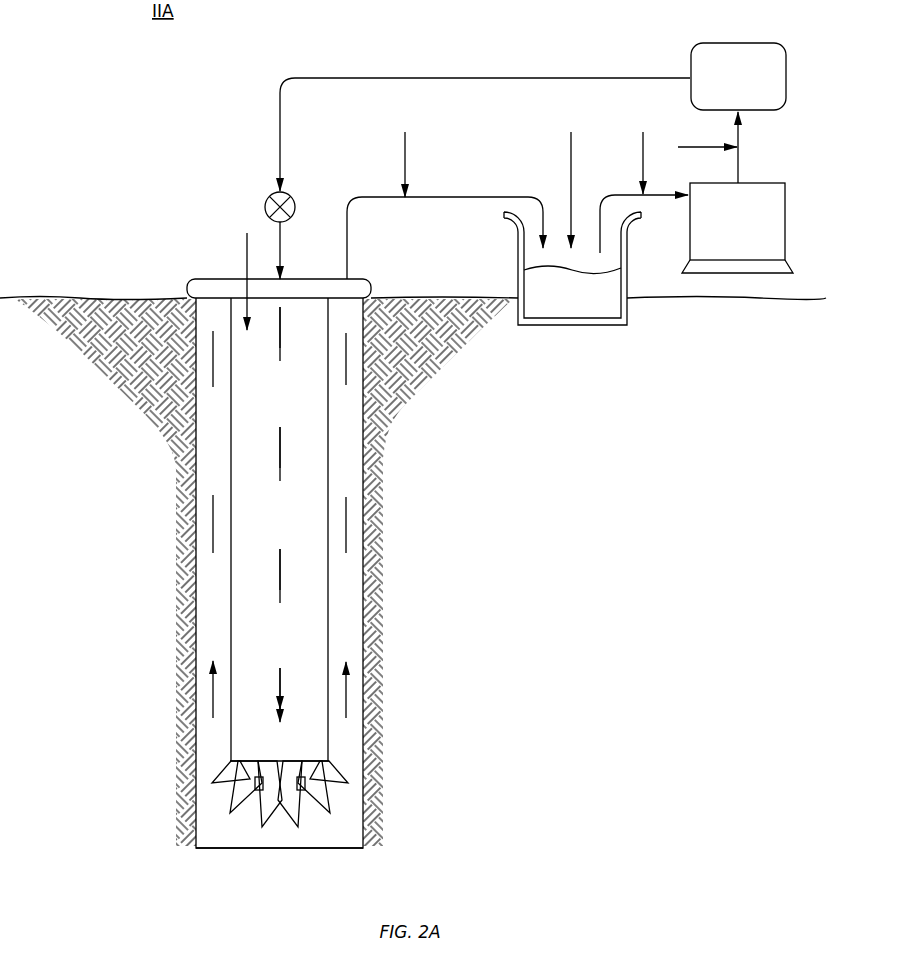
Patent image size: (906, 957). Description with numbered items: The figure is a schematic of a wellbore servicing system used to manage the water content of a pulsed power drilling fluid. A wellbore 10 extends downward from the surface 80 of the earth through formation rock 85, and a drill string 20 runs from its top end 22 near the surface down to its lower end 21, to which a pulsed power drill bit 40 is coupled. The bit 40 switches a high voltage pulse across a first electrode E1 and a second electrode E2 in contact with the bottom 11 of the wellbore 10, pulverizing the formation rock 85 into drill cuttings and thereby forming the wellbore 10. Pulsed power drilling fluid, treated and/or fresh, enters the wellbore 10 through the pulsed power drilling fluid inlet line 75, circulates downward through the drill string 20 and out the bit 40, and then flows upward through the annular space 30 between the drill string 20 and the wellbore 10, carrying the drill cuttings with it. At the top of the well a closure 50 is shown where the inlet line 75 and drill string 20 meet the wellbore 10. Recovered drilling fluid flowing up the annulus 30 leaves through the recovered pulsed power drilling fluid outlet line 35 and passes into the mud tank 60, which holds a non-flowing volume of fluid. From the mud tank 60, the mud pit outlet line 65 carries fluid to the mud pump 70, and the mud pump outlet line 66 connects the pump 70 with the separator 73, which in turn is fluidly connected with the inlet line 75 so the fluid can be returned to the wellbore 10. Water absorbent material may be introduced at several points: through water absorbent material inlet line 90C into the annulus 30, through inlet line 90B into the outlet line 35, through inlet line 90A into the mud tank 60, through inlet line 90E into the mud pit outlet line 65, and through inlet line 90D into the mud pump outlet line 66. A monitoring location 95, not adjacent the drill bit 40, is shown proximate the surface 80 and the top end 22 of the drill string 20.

The wellbore 10 is at (180, 448).
The bottom of the wellbore 11 is at (325, 835).
The drill string 20 is at (330, 466).
The end of the drill string 21 is at (250, 752).
The top end of drill string 22 is at (313, 300).
The annular space 30 is at (347, 320).
The recovered pulsed power drilling fluid outlet line 35 is at (437, 198).
The pulsed power drill bit 40 is at (330, 800).
The wellhead cap 50 is at (240, 295).
The mud tank 60 is at (572, 268).
The mud pit outlet line 65 is at (656, 200).
The mud pump outlet line 66 is at (742, 153).
The mud pump 70 is at (737, 228).
The separator 73 is at (738, 76).
The pulsed power drilling fluid inlet line 75 is at (458, 78).
The surface 80 is at (95, 297).
The formation rock 85 is at (726, 356).
The monitoring location 95 is at (210, 320).
The water absorbent material inlet line 90A is at (568, 152).
The water absorbent material inlet line 90B is at (402, 145).
The water absorbent material inlet line 90C is at (262, 261).
The water absorbent material inlet line 90D is at (707, 150).
The water absorbent material inlet line 90E is at (643, 148).
The first electrode E1 is at (255, 785).
The second electrode E2 is at (345, 780).